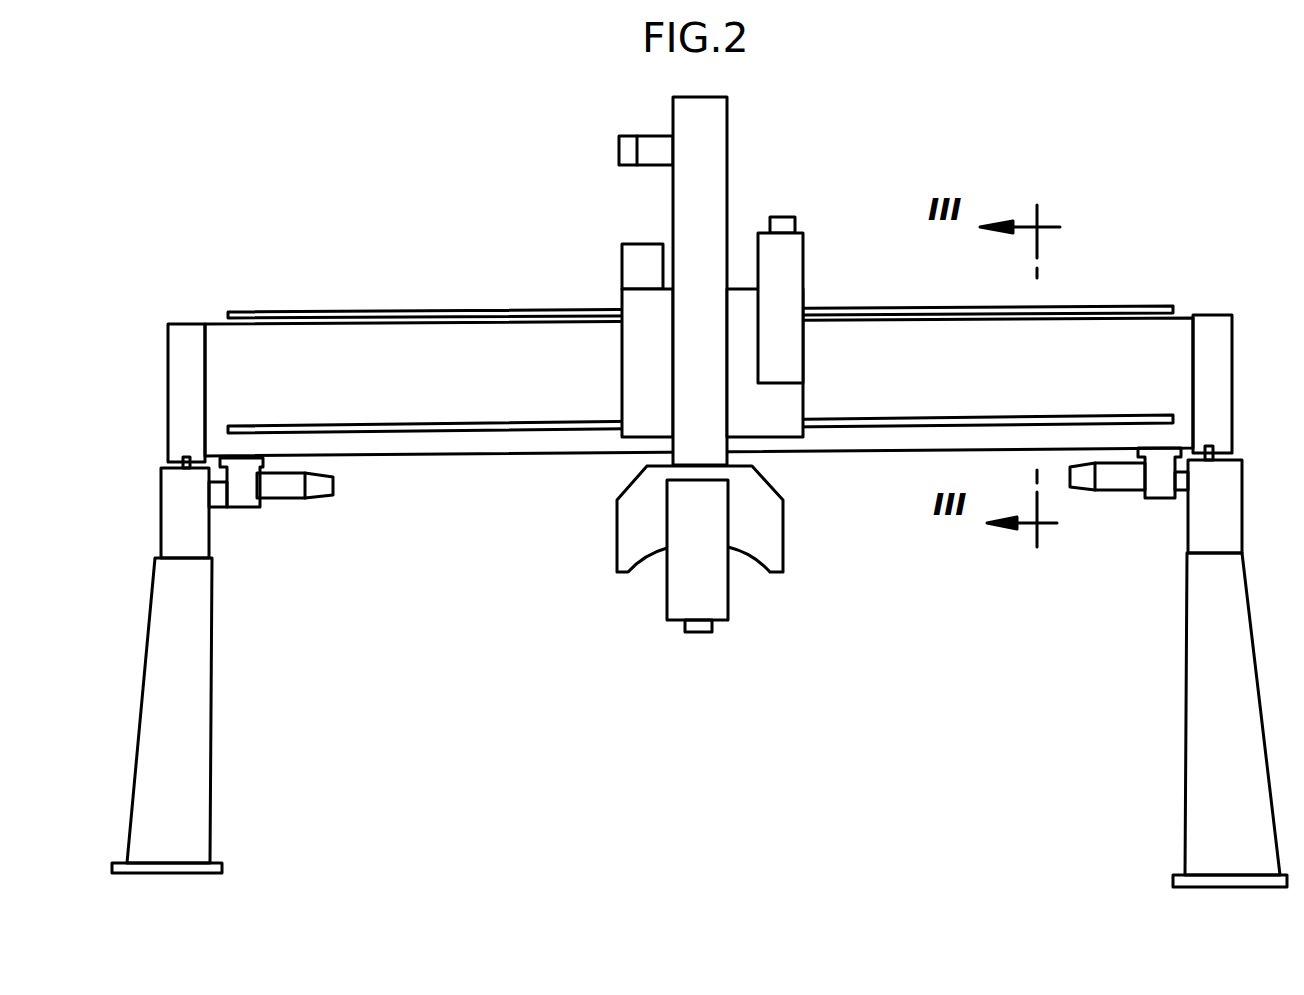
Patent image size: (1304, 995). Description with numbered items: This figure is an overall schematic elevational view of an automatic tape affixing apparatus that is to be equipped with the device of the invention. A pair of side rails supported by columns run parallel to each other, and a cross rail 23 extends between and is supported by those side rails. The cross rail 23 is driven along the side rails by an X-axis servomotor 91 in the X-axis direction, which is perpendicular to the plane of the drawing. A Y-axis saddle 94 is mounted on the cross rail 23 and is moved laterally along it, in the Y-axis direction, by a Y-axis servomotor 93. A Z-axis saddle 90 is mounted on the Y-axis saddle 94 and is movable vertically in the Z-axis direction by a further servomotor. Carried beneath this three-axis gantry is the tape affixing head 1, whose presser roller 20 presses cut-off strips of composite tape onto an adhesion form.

The tape affixing head 1 is at (670, 605).
The presser roller 20 is at (713, 630).
The cross rail 23 is at (272, 335).
The Z-axis saddle 90 is at (736, 104).
The X-axis servomotor 91 is at (322, 490).
The Y-axis servomotor 93 is at (785, 248).
The Y-axis saddle 94 is at (781, 427).